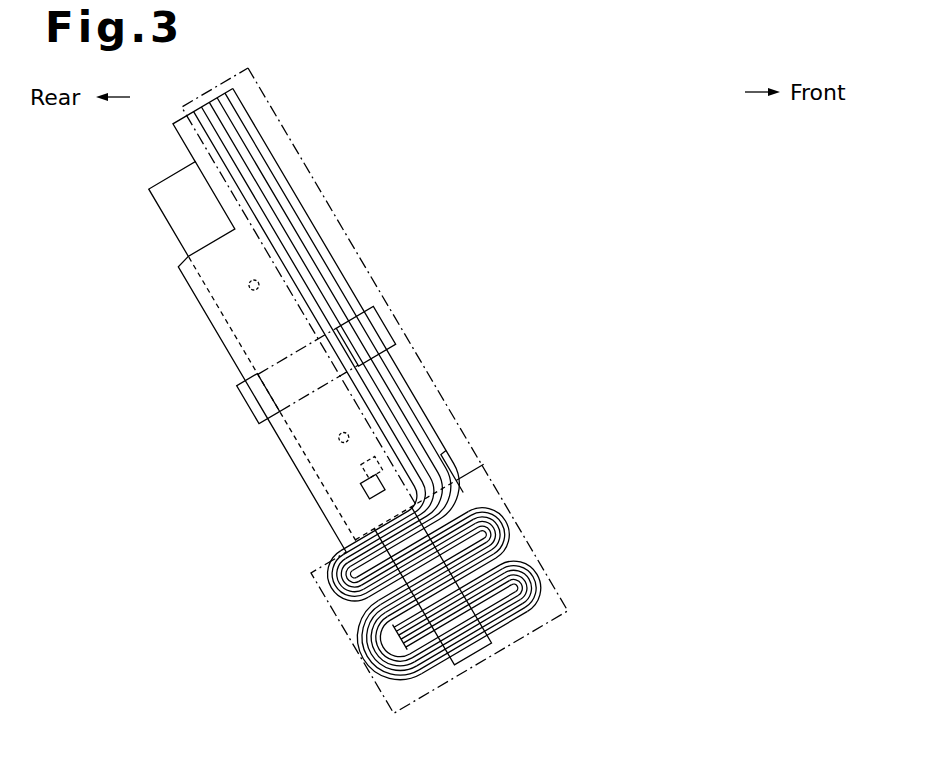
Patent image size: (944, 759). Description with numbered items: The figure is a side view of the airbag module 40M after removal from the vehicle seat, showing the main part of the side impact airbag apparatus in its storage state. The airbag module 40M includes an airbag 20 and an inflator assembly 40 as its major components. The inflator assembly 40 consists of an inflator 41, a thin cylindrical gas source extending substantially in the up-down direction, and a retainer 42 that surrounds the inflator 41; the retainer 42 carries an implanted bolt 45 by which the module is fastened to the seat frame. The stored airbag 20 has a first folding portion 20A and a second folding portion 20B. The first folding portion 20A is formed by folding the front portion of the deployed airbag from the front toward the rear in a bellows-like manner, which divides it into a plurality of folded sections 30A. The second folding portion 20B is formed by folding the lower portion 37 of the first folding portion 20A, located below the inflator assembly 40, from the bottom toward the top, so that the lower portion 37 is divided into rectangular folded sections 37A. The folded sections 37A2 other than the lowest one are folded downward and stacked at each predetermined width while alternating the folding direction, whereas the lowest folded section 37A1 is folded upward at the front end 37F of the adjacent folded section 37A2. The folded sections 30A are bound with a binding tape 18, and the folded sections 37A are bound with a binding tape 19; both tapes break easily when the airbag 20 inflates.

The binding tape 18 is at (388, 320).
The binding tape 19 is at (495, 641).
The airbag 20 is at (291, 176).
The first folding portion 20A is at (447, 404).
The second folding portion 20B is at (503, 475).
The folded sections 30A is at (240, 108).
The lower portion 37 is at (362, 657).
The folded sections 37A is at (402, 611).
The lowest folded section 37A1 is at (512, 565).
The folded sections other than the lowest one 37A2 is at (335, 578).
The front end 37F is at (538, 574).
The inflator assembly 40 is at (132, 212).
The retainer 42 is at (170, 226).
The airbag module 40M is at (414, 221).
The inflator 41 is at (362, 471).
The bolt 45 is at (255, 294).